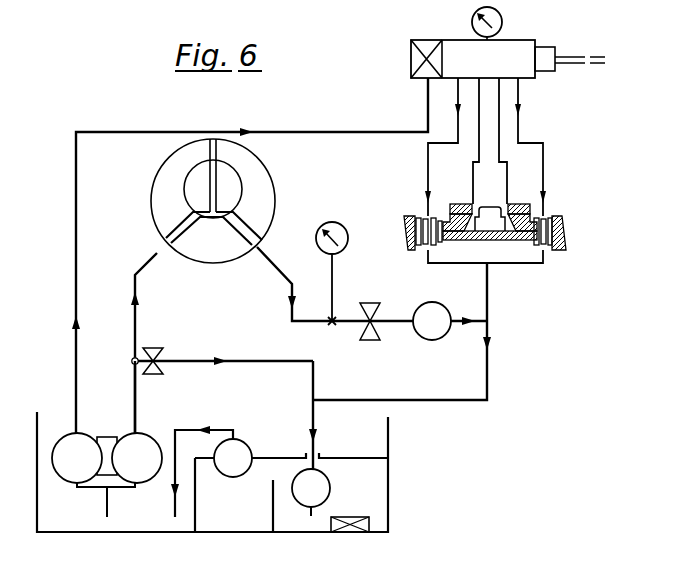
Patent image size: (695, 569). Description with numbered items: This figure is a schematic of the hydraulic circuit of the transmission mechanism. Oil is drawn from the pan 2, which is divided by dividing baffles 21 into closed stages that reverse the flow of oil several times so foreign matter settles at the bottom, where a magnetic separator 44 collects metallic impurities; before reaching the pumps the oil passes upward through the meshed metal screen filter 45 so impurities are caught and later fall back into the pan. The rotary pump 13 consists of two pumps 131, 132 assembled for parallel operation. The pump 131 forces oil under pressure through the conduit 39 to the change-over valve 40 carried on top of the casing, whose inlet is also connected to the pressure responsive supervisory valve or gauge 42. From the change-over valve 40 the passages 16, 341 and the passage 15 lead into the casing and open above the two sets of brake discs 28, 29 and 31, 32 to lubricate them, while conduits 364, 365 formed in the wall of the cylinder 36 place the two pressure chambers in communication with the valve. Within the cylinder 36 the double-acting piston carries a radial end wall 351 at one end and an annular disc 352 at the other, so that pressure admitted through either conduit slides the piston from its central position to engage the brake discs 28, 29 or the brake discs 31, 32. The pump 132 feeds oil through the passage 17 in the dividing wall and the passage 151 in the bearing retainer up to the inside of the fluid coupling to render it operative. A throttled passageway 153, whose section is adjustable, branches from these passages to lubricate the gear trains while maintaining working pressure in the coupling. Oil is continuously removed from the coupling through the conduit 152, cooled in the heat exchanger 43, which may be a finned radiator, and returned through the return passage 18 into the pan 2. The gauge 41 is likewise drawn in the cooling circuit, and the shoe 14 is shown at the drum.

The pan 2 is at (37, 494).
The dividing baffles 21 is at (272, 508).
The pump 13 is at (103, 437).
The pump 131 is at (68, 444).
The pump 132 is at (145, 470).
The brake shoe 14 is at (210, 258).
The bearing retainer 15 is at (428, 190).
The passage 151 is at (158, 254).
The conduit 152 is at (270, 256).
The throttled passageway 153 is at (157, 358).
The passage 16 is at (164, 178).
The passage 17 is at (136, 392).
The return passage 18 is at (397, 389).
The brake disc 28 is at (410, 230).
The brake disc 29 is at (412, 243).
The brake disc 31 is at (579, 233).
The brake disc 32 is at (563, 236).
The passage 341 is at (543, 152).
The radial end wall 351 is at (440, 214).
The annular disc 352 is at (530, 212).
The cylinder 36 is at (487, 216).
The conduit 364 is at (472, 178).
The conduit 365 is at (507, 171).
The conduit 39 is at (142, 131).
The change-over valve 40 is at (522, 62).
The pressure gauge 41 is at (320, 250).
The pressure responsive supervisory valve or gauge 42 is at (501, 19).
The heat exchanger 43 is at (438, 336).
The magnetic separator 44 is at (369, 525).
The meshed metal screen filter 45 is at (249, 449).